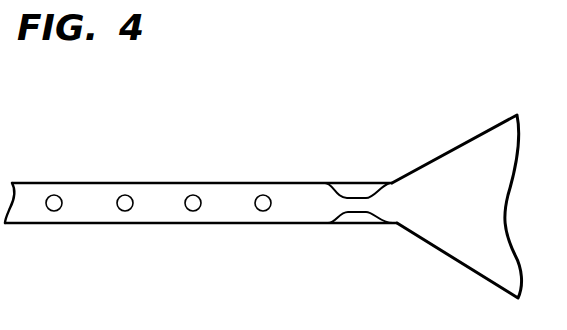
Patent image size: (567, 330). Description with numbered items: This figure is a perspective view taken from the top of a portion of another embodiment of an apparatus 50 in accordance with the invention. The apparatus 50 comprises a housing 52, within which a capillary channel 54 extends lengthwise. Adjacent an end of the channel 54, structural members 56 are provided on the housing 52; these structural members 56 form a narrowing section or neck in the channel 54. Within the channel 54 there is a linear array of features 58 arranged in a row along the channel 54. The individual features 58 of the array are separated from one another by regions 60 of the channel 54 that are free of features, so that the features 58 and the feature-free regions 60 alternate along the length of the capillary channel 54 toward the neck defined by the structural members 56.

The apparatus 50 is at (335, 99).
The housing 52 is at (247, 183).
The capillary channel 54 is at (312, 216).
The structural members 56 is at (358, 190).
The features 58 is at (263, 211).
The regions 60 is at (223, 200).